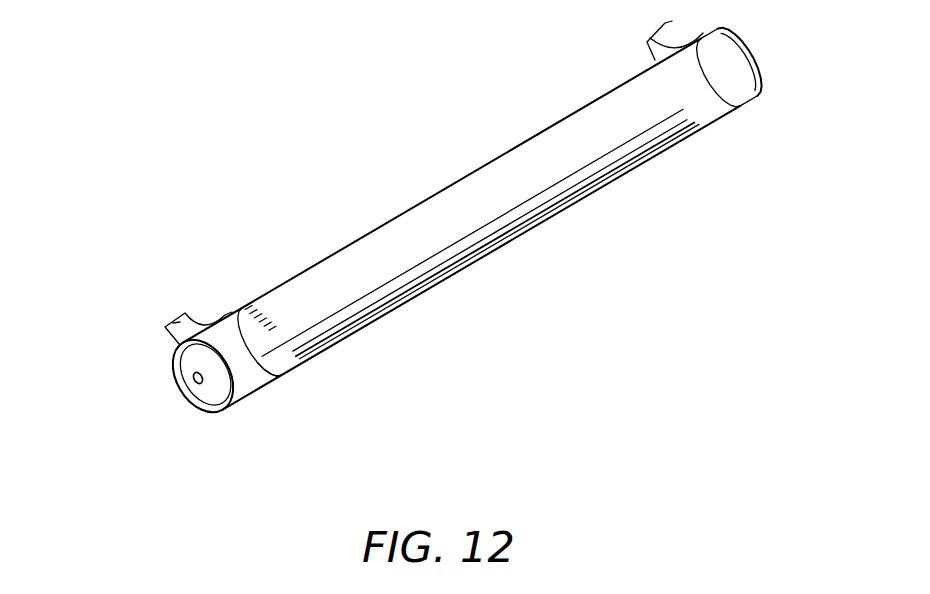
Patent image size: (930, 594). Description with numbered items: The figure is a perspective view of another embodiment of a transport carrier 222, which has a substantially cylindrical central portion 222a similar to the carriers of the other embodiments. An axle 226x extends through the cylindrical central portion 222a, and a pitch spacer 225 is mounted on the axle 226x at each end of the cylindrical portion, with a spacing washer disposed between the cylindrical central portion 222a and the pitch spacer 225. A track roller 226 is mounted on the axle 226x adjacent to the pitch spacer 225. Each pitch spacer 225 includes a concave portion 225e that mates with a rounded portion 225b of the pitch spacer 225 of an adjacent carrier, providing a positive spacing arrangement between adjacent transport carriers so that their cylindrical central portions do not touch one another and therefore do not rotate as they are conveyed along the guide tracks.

The transport carrier 222 is at (461, 224).
The cylindrical central portion 222a is at (367, 283).
The pitch spacer 225 is at (477, 232).
The rounded portion 225b is at (258, 395).
The concave portion 225e is at (193, 320).
The track roller 226 is at (159, 412).
The axle 226x is at (193, 380).